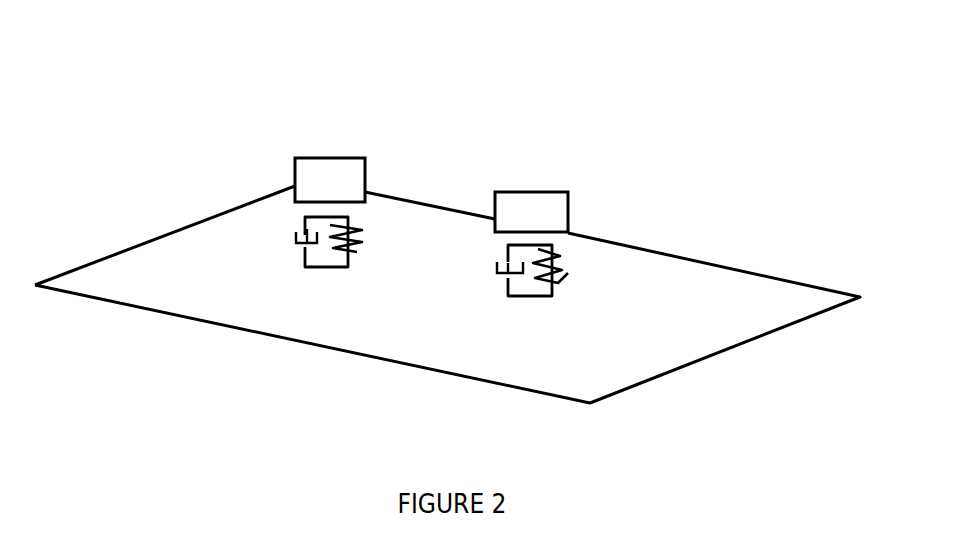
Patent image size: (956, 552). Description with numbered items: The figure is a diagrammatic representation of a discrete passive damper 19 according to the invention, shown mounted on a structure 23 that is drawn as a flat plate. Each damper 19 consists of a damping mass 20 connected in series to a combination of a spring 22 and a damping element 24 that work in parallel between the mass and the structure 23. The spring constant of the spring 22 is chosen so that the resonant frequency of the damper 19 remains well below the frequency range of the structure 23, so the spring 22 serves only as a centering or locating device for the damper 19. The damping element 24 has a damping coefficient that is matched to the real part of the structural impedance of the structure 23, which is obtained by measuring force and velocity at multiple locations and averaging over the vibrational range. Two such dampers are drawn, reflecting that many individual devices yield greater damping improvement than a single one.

The discrete passive damper 19 is at (578, 96).
The damping mass 20 is at (312, 160).
The spring 22 is at (350, 246).
The structure 23 is at (683, 368).
The damping element 24 is at (307, 243).